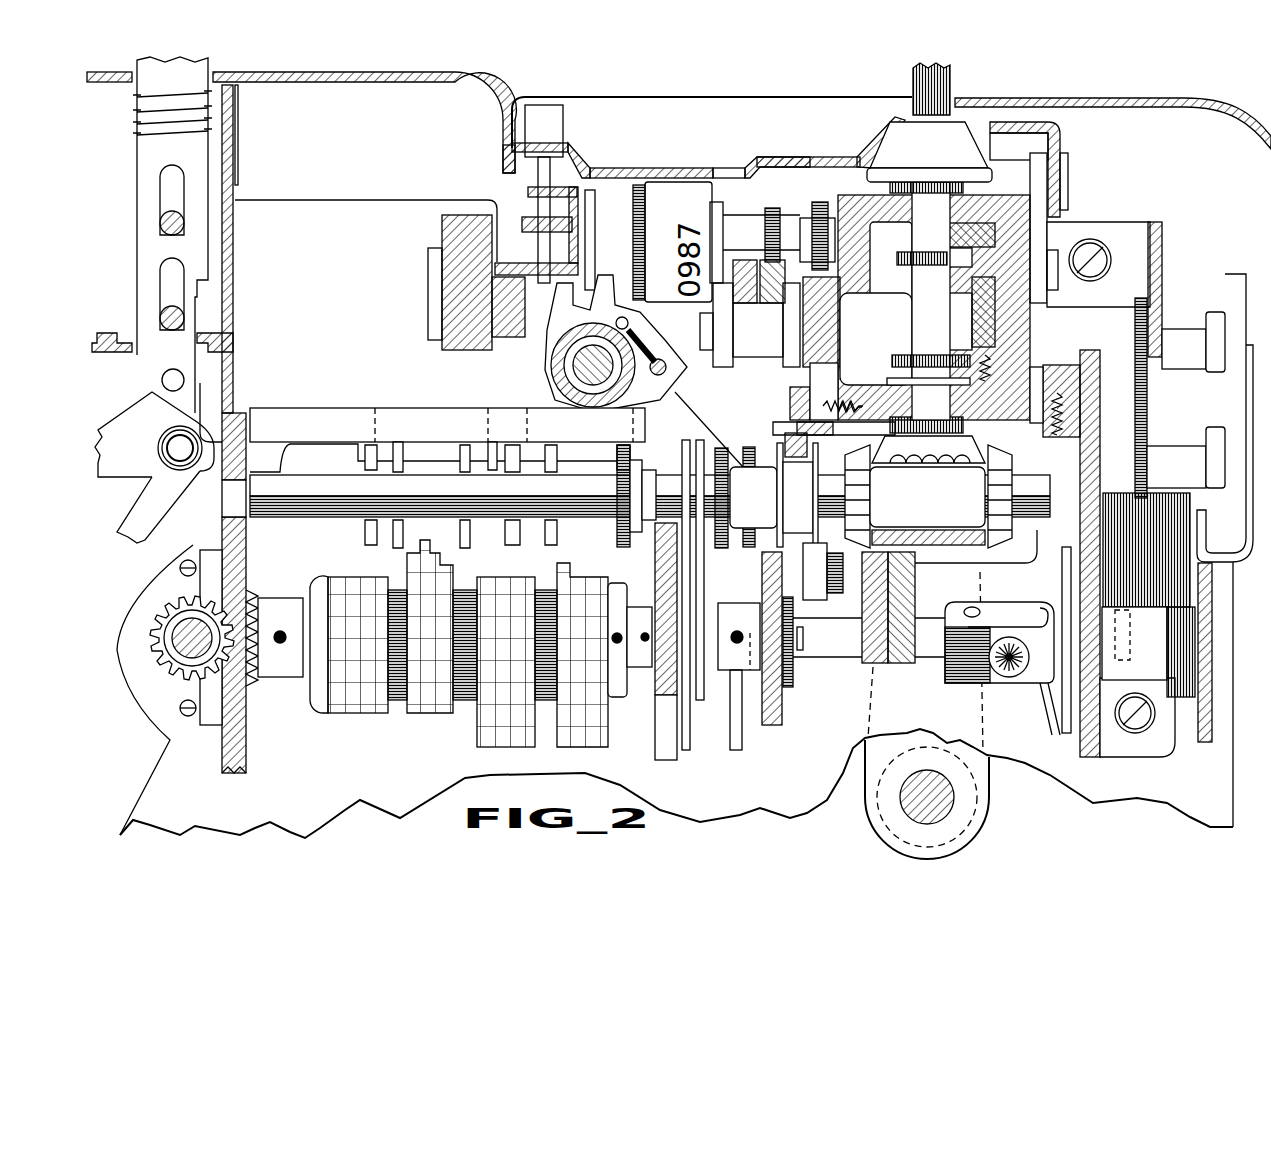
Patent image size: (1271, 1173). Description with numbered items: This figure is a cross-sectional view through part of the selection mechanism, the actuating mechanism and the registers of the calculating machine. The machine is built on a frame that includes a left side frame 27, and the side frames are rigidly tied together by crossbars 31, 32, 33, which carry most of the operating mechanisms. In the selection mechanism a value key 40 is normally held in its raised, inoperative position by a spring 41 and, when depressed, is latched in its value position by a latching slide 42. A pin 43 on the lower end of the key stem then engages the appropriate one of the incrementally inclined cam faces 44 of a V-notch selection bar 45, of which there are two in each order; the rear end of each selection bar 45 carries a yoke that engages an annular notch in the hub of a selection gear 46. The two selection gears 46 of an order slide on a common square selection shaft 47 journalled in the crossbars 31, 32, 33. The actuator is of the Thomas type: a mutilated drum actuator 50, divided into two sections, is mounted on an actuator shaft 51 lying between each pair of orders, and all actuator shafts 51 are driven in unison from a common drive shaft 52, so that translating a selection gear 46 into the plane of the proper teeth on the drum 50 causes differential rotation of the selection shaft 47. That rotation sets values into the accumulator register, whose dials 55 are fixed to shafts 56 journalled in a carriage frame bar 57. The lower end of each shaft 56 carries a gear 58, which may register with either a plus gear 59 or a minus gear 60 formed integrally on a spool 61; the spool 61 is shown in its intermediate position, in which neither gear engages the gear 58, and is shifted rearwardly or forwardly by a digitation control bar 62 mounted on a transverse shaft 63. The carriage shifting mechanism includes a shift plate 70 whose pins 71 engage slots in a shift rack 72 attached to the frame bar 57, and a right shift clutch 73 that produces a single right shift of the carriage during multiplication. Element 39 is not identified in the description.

The left side frame 27 is at (1133, 790).
The crossbar 31 is at (250, 755).
The crossbar 32 is at (660, 742).
The crossbar 33 is at (1088, 752).
The solenoid block 39 is at (445, 340).
The value key 40 is at (238, 78).
The spring 41 is at (146, 100).
The latching slide 42 is at (104, 332).
The pin 43 is at (165, 383).
The cam face 44 is at (182, 405).
The selection bar 45 is at (126, 466).
The selection gear 46 is at (622, 524).
The selection shaft 47 is at (322, 500).
The drum actuator 50 is at (421, 710).
The actuator shaft 51 is at (636, 600).
The drive shaft 52 is at (182, 648).
The register dial 55 is at (965, 130).
The shaft 56 is at (920, 282).
The carriage frame bar 57 is at (1000, 292).
The gear 58 is at (975, 450).
The plus gear 59 is at (860, 470).
The minus gear 60 is at (1000, 535).
The spool 61 is at (927, 497).
The digitation control bar 62 is at (950, 530).
The transverse shaft 63 is at (937, 788).
The shift plate 70 is at (1222, 287).
The pin 71 is at (1185, 352).
The shift rack 72 is at (1166, 265).
The right shift clutch 73 is at (1018, 696).